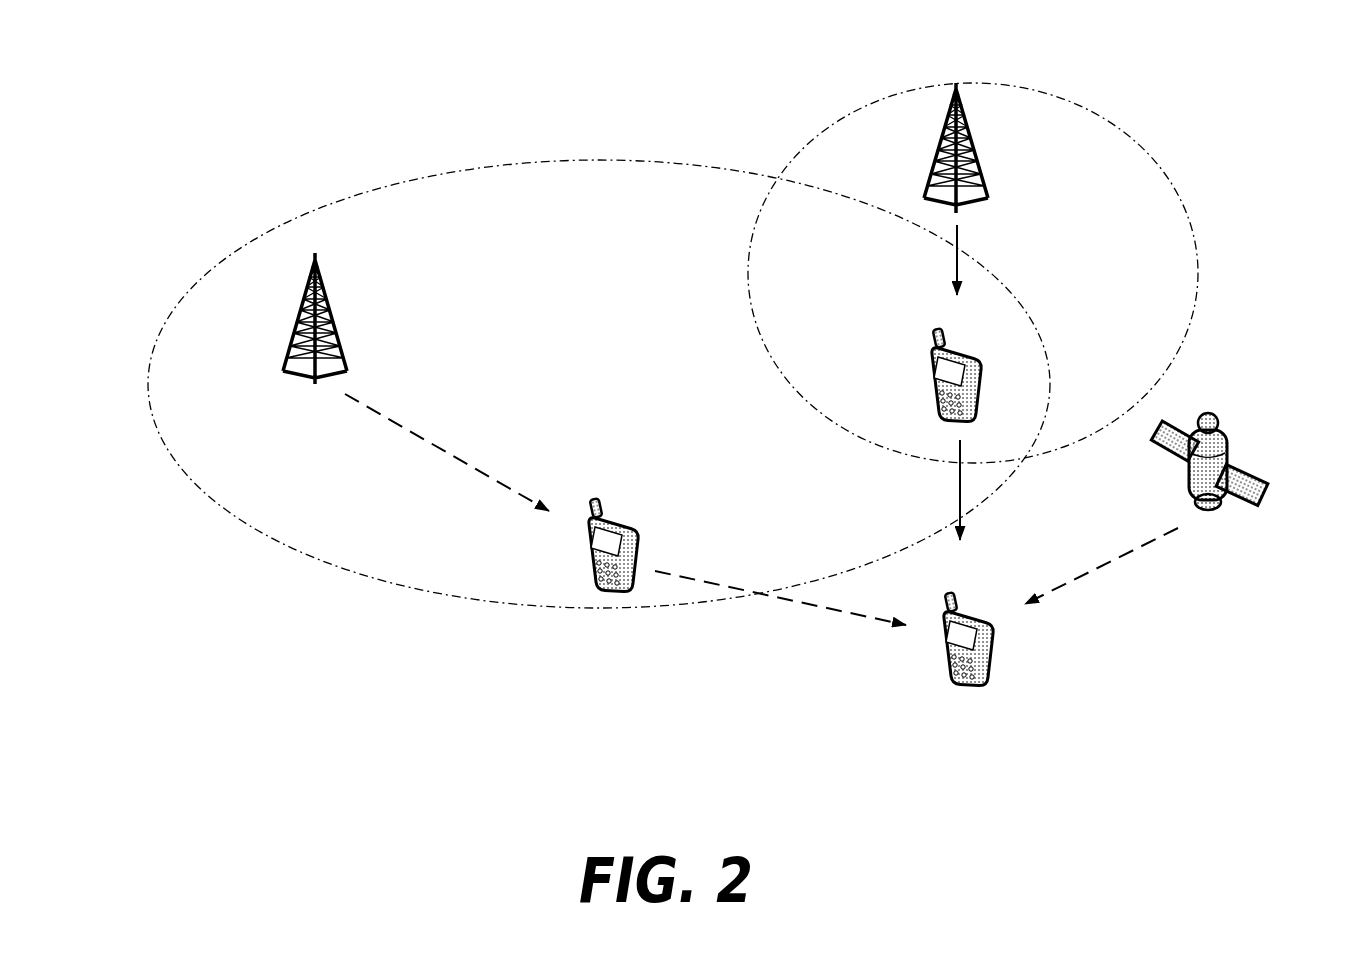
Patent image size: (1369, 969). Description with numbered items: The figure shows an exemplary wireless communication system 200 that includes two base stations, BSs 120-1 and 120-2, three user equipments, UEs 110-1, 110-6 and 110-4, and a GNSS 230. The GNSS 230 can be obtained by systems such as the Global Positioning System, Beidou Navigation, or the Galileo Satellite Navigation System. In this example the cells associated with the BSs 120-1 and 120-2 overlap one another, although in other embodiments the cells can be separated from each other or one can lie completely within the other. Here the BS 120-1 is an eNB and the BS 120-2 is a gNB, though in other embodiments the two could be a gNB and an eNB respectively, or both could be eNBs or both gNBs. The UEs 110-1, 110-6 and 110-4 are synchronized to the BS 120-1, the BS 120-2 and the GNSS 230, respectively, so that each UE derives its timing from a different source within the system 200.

The wireless communication system 200 is at (270, 132).
The BS 120-1 is at (345, 302).
The BS 120-2 is at (983, 140).
The UE 110-1 is at (627, 502).
The UE 110-6 is at (918, 362).
The UE 110-4 is at (1007, 648).
The GNSS 230 is at (1230, 413).